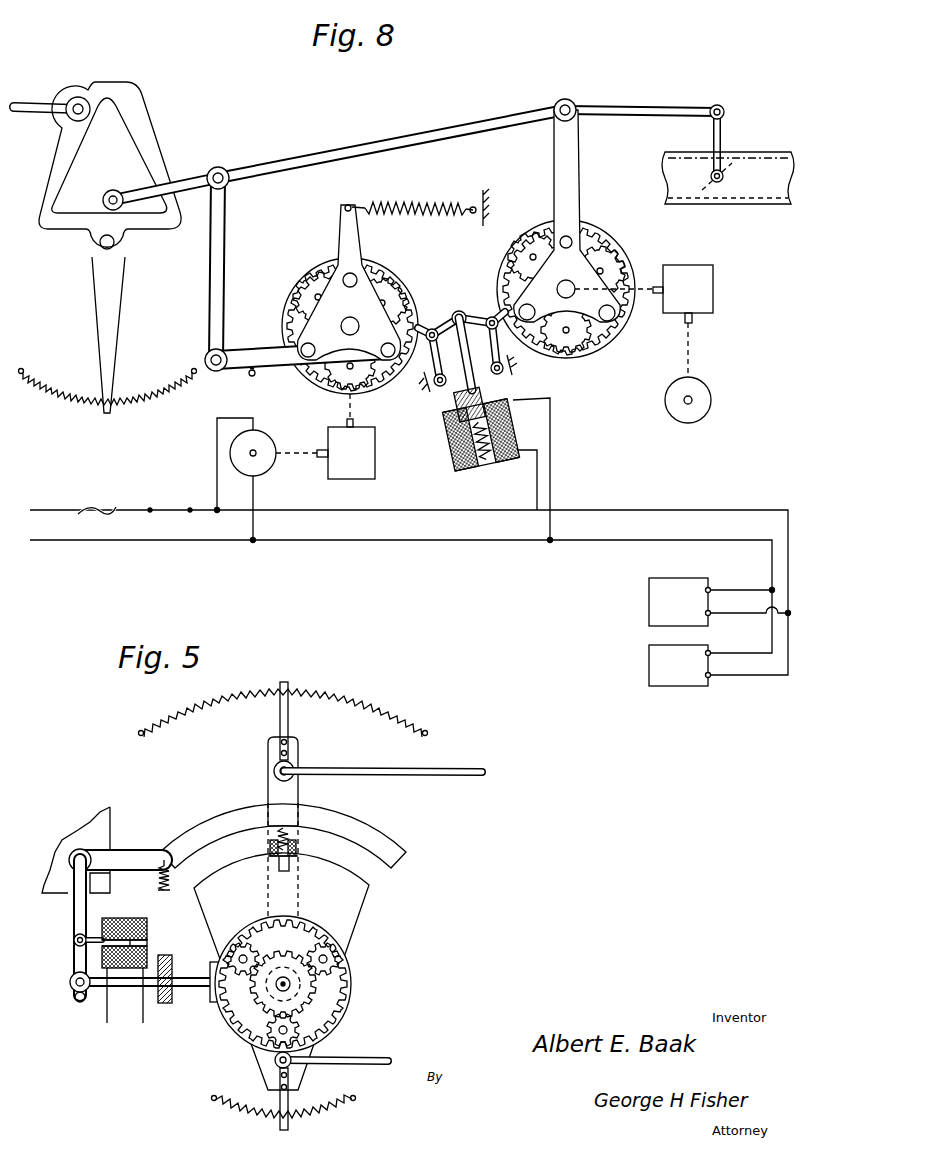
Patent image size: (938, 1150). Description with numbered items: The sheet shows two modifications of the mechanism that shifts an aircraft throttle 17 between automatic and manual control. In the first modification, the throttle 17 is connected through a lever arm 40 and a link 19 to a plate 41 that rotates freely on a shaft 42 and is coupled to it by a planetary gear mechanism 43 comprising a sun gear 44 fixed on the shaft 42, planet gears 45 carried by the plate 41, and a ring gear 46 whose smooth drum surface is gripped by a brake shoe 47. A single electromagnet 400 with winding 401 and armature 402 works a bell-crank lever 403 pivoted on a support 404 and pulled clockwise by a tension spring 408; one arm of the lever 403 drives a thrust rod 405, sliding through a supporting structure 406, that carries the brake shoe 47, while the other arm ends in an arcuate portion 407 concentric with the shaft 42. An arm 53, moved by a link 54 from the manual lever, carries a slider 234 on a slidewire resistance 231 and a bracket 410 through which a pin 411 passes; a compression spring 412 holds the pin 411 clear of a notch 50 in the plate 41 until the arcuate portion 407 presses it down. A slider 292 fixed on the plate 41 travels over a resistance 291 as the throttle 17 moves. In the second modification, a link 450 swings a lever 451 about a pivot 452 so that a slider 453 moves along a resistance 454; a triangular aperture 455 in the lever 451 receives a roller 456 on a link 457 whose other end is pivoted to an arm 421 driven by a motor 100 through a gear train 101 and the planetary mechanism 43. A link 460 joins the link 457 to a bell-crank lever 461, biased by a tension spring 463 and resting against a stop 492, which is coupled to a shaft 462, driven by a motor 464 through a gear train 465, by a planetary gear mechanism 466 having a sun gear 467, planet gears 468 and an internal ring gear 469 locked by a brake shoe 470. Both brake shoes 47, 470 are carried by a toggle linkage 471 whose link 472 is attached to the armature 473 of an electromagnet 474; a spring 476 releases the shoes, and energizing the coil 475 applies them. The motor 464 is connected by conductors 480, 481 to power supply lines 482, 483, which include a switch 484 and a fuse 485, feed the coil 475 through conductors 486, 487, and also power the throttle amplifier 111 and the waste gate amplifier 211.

In FIG. 8, the link 450 is at (32, 103).
In FIG. 8, the triangular aperture 455 is at (113, 142).
In FIG. 8, the pivot 452 is at (97, 246).
In FIG. 8, the roller 456 is at (114, 192).
In FIG. 8, the lever 451 is at (116, 284).
In FIG. 8, the slider 453 is at (112, 391).
In FIG. 8, the resistance 454 is at (146, 400).
In FIG. 8, the link 457 is at (328, 147).
In FIG. 8, the link 19 is at (641, 107).
In FIG. 5, the link 19 is at (382, 1058).
In FIG. 8, the lever arm 40 is at (722, 127).
In FIG. 8, the throttle 17 is at (718, 204).
In FIG. 8, the link 460 is at (224, 243).
In FIG. 8, the bell-crank lever 461 is at (255, 346).
In FIG. 8, the stop 492 is at (251, 377).
In FIG. 8, the planetary gear mechanism 466 is at (399, 273).
In FIG. 8, the sun gear 467 is at (318, 300).
In FIG. 8, the planet gears 468 is at (338, 275).
In FIG. 8, the internal ring gear 469 is at (340, 393).
In FIG. 8, the shaft 462 is at (360, 318).
In FIG. 8, the tension spring 463 is at (422, 200).
In FIG. 8, the planetary gear mechanism 43 is at (596, 364).
In FIG. 5, the planetary gear mechanism 43 is at (358, 974).
In FIG. 8, the ring gear 46 is at (605, 262).
In FIG. 5, the ring gear 46 is at (326, 1037).
In FIG. 8, the sun gear 44 is at (522, 258).
In FIG. 5, the sun gear 44 is at (312, 1000).
In FIG. 8, the planet gears 45 is at (537, 244).
In FIG. 5, the planet gears 45 is at (244, 944).
In FIG. 8, the arm 421 is at (580, 185).
In FIG. 8, the shaft 42 is at (578, 286).
In FIG. 5, the shaft 42 is at (292, 985).
In FIG. 8, the brake shoe 470 is at (456, 313).
In FIG. 8, the brake shoe 47 is at (490, 318).
In FIG. 5, the brake shoe 47 is at (214, 964).
In FIG. 8, the toggle linkage 471 is at (506, 376).
In FIG. 8, the link 472 is at (462, 396).
In FIG. 8, the armature 473 is at (466, 438).
In FIG. 8, the electromagnet 474 is at (464, 472).
In FIG. 8, the coil 475 is at (508, 412).
In FIG. 8, the spring 476 is at (481, 472).
In FIG. 8, the conductor 486 is at (537, 498).
In FIG. 8, the conductor 487 is at (552, 478).
In FIG. 8, the gear train 101 is at (713, 290).
In FIG. 8, the motor 100 is at (710, 393).
In FIG. 8, the conductor 480 is at (217, 460).
In FIG. 8, the motor 464 is at (260, 470).
In FIG. 8, the power supply line 482 is at (352, 500).
In FIG. 8, the gear train 465 is at (373, 470).
In FIG. 8, the power supply line 483 is at (396, 533).
In FIG. 8, the fuse 485 is at (96, 507).
In FIG. 8, the switch 484 is at (172, 507).
In FIG. 8, the conductor 481 is at (254, 528).
In FIG. 8, the throttle amplifier 111 is at (649, 602).
In FIG. 8, the waste gate amplifier 211 is at (649, 664).
In FIG. 5, the slidewire resistance 231 is at (346, 694).
In FIG. 5, the slider 234 is at (290, 727).
In FIG. 5, the arm 53 is at (300, 790).
In FIG. 5, the link 54 is at (446, 778).
In FIG. 5, the arcuate portion 407 is at (376, 833).
In FIG. 5, the compression spring 412 is at (272, 832).
In FIG. 5, the pin 411 is at (297, 854).
In FIG. 5, the bracket 410 is at (270, 850).
In FIG. 5, the notch 50 is at (300, 866).
In FIG. 5, the plate 41 is at (366, 920).
In FIG. 5, the support 404 is at (112, 814).
In FIG. 5, the tension spring 408 is at (172, 884).
In FIG. 5, the bell-crank lever 403 is at (76, 906).
In FIG. 5, the armature 402 is at (100, 946).
In FIG. 5, the winding 401 is at (122, 918).
In FIG. 5, the electromagnet 400 is at (150, 944).
In FIG. 5, the thrust rod 405 is at (124, 990).
In FIG. 5, the supporting structure 406 is at (164, 1004).
In FIG. 5, the slider 292 is at (290, 1103).
In FIG. 5, the resistance 291 is at (236, 1106).